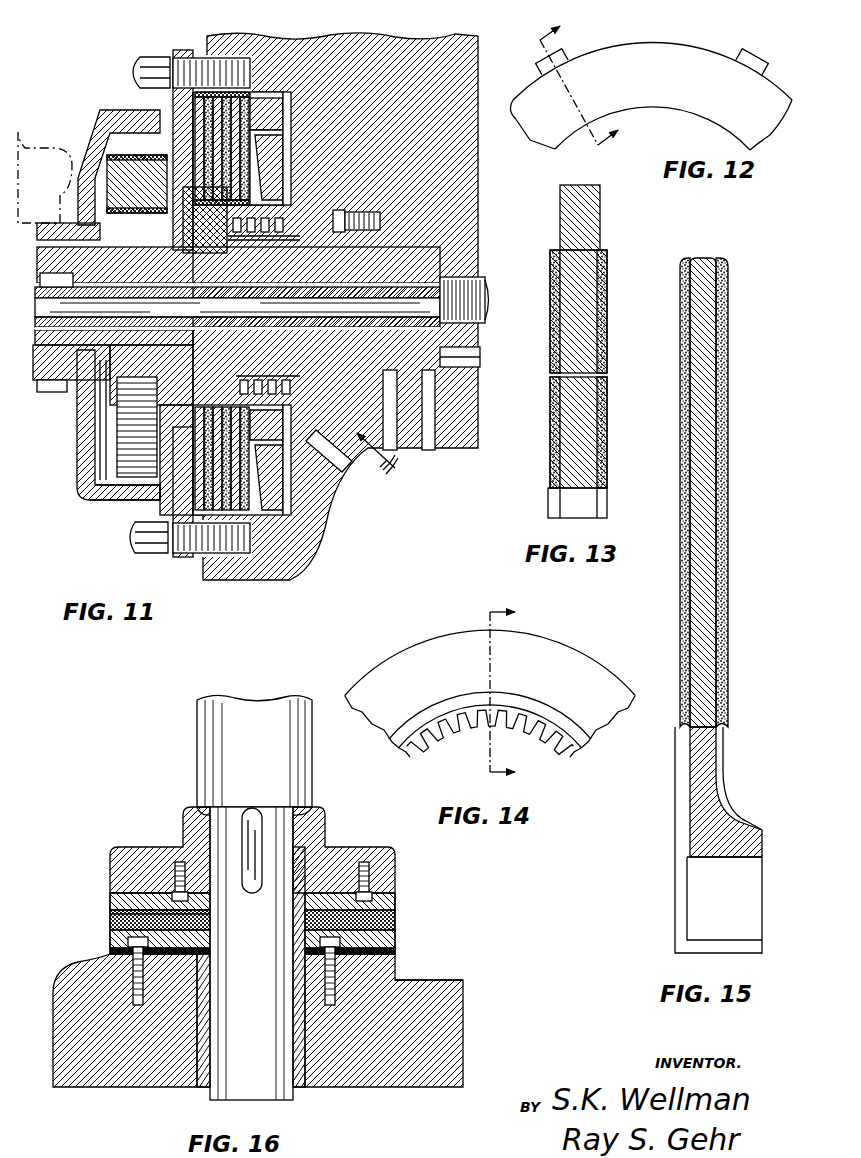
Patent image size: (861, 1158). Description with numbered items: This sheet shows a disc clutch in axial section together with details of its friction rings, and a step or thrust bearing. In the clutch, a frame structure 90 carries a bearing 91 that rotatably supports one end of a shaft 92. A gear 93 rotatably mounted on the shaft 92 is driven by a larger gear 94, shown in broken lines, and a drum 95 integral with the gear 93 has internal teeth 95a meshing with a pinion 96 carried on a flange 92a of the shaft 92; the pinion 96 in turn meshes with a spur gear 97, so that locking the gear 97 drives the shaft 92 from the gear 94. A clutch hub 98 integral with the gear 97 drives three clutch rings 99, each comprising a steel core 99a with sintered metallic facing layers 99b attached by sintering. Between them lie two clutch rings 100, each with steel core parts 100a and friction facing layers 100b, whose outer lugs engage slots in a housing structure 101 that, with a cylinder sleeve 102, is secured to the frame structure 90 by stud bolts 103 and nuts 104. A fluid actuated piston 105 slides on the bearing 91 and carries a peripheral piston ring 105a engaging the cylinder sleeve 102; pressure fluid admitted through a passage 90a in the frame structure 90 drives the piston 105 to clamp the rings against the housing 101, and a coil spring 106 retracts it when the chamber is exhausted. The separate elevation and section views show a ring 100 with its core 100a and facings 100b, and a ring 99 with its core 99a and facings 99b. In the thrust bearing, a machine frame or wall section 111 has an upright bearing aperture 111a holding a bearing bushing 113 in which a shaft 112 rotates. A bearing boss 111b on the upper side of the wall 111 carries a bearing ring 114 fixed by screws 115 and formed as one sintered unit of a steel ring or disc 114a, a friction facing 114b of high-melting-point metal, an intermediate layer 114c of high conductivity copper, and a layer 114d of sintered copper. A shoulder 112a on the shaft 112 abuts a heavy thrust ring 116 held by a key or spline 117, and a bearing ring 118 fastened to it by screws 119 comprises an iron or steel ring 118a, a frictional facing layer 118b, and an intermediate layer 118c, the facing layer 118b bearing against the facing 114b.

In FIG. 11, the frame structure 90 is at (318, 520).
In FIG. 11, the passage 90a is at (360, 452).
In FIG. 11, the bearing 91 is at (478, 357).
In FIG. 11, the shaft 92 is at (426, 232).
In FIG. 11, the flange 92a is at (95, 432).
In FIG. 11, the gear 93 is at (50, 393).
In FIG. 11, the larger gear 94 is at (43, 130).
In FIG. 11, the drum 95 is at (97, 470).
In FIG. 11, the internal teeth 95a is at (110, 500).
In FIG. 11, the pinion 96 is at (100, 130).
In FIG. 11, the spur gear 97 is at (236, 381).
In FIG. 11, the clutch hub 98 is at (205, 220).
In FIG. 11, the clutch rings 99 is at (328, 180).
In FIG. 15, the clutch rings 99 is at (735, 813).
In FIG. 14, the clutch rings 99 is at (575, 662).
In FIG. 15, the steel core 99a is at (718, 258).
In FIG. 15, the facing layers 99b is at (682, 338).
In FIG. 11, the clutch rings 100 is at (246, 150).
In FIG. 12, the clutch rings 100 is at (660, 43).
In FIG. 13, the clutch rings 100 is at (618, 478).
In FIG. 13, the steel core parts 100a is at (550, 298).
In FIG. 13, the friction facing layers 100b is at (550, 432).
In FIG. 11, the housing structure 101 is at (173, 108).
In FIG. 11, the cylinder sleeve 102 is at (288, 96).
In FIG. 11, the stud bolts 103 is at (190, 60).
In FIG. 11, the nuts 104 is at (152, 62).
In FIG. 11, the fluid actuated piston 105 is at (292, 130).
In FIG. 11, the peripheral piston ring 105a is at (255, 92).
In FIG. 11, the coil spring 106 is at (290, 410).
In FIG. 16, the machine frame or wall section 111 is at (465, 1024).
In FIG. 16, the bearing aperture 111a is at (305, 1085).
In FIG. 16, the bearing boss 111b is at (398, 978).
In FIG. 16, the shaft 112 is at (210, 736).
In FIG. 16, the shoulder 112a is at (200, 812).
In FIG. 16, the bearing bushing 113 is at (197, 1048).
In FIG. 16, the bearing ring 114 is at (400, 934).
In FIG. 16, the steel ring or disc 114a is at (110, 956).
In FIG. 16, the friction facing 114b is at (110, 930).
In FIG. 16, the intermediate layer 114c is at (110, 944).
In FIG. 16, the layer 114d is at (396, 956).
In FIG. 16, the screws 115 is at (132, 1000).
In FIG. 16, the heavy thrust ring 116 is at (398, 857).
In FIG. 16, the key or spline 117 is at (252, 895).
In FIG. 16, the bearing ring 118 is at (400, 910).
In FIG. 16, the iron or steel ring 118a is at (130, 894).
In FIG. 16, the frictional facing layer 118b is at (110, 920).
In FIG. 16, the intermediate layer 118c is at (110, 912).
In FIG. 16, the screws 119 is at (178, 860).